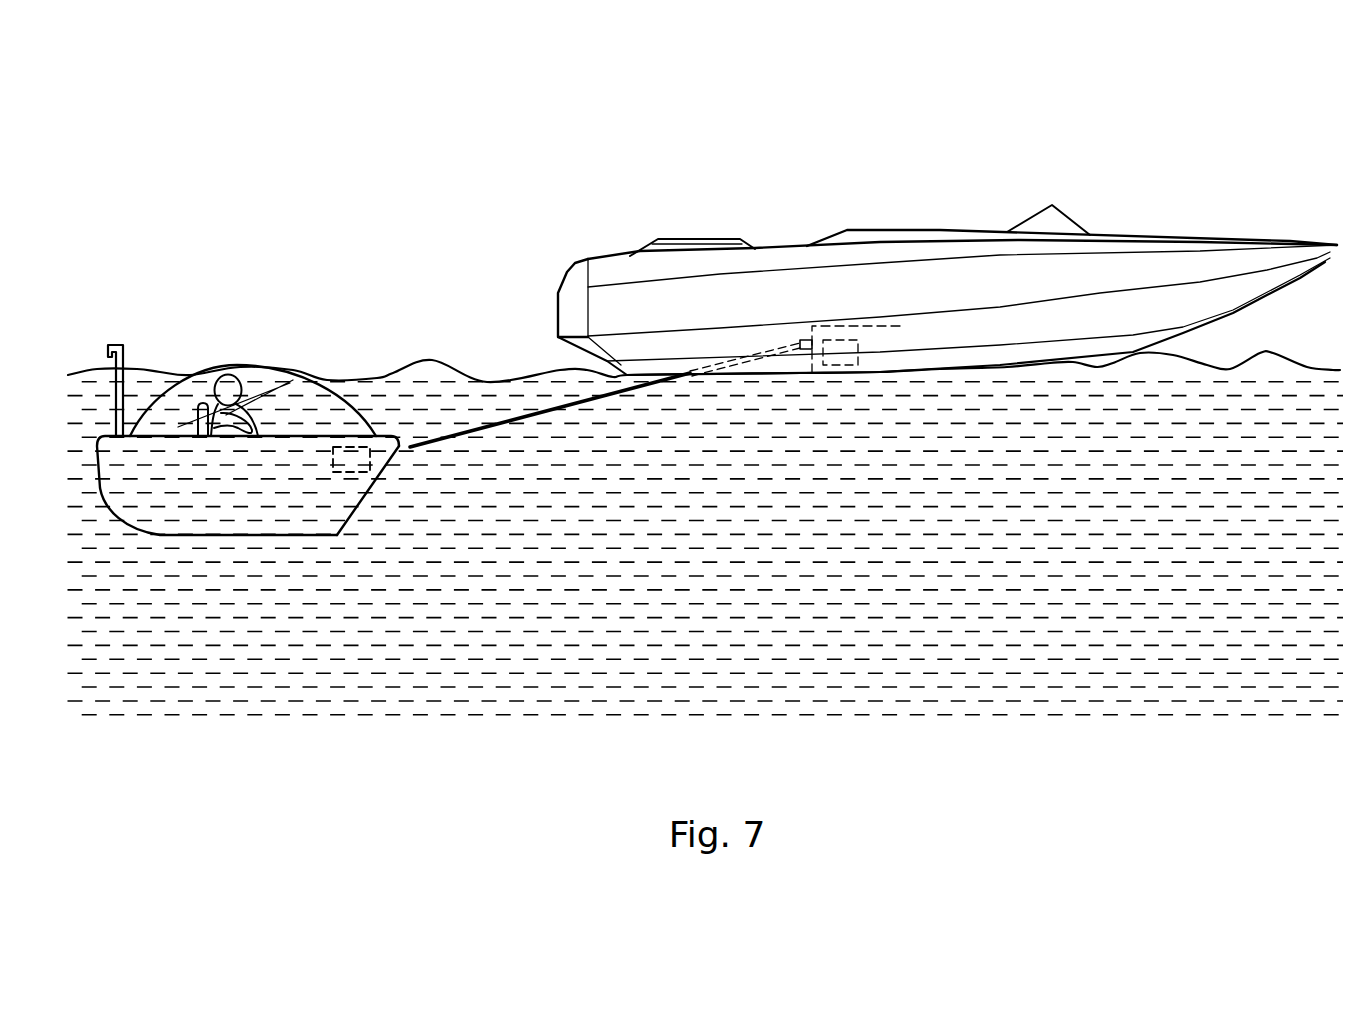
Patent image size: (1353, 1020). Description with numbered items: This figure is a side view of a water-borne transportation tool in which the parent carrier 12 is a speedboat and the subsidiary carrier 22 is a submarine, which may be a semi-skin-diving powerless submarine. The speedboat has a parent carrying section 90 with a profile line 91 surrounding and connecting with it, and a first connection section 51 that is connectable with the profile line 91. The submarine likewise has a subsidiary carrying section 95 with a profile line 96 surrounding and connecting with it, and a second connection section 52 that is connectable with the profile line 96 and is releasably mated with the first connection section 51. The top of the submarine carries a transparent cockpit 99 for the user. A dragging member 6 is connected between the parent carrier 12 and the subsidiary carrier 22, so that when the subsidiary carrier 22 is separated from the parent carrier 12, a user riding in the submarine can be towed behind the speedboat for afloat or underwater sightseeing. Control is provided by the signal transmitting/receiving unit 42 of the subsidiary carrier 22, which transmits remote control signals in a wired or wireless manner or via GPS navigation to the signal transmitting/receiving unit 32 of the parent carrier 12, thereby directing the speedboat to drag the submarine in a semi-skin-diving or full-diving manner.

The parent carrying section 90 is at (788, 246).
The parent carrier 12 is at (950, 250).
The profile line 91 is at (560, 282).
The dragging member 6 is at (533, 418).
The first connection section 51 is at (812, 360).
The signal transmitting/receiving unit 32 is at (838, 366).
The subsidiary carrier 22 is at (237, 537).
The profile line 96 is at (353, 520).
The signal transmitting/receiving unit 42 is at (352, 472).
The second connection section 52 is at (380, 433).
The subsidiary carrying section 95 is at (162, 434).
The transparent cockpit 99 is at (242, 380).